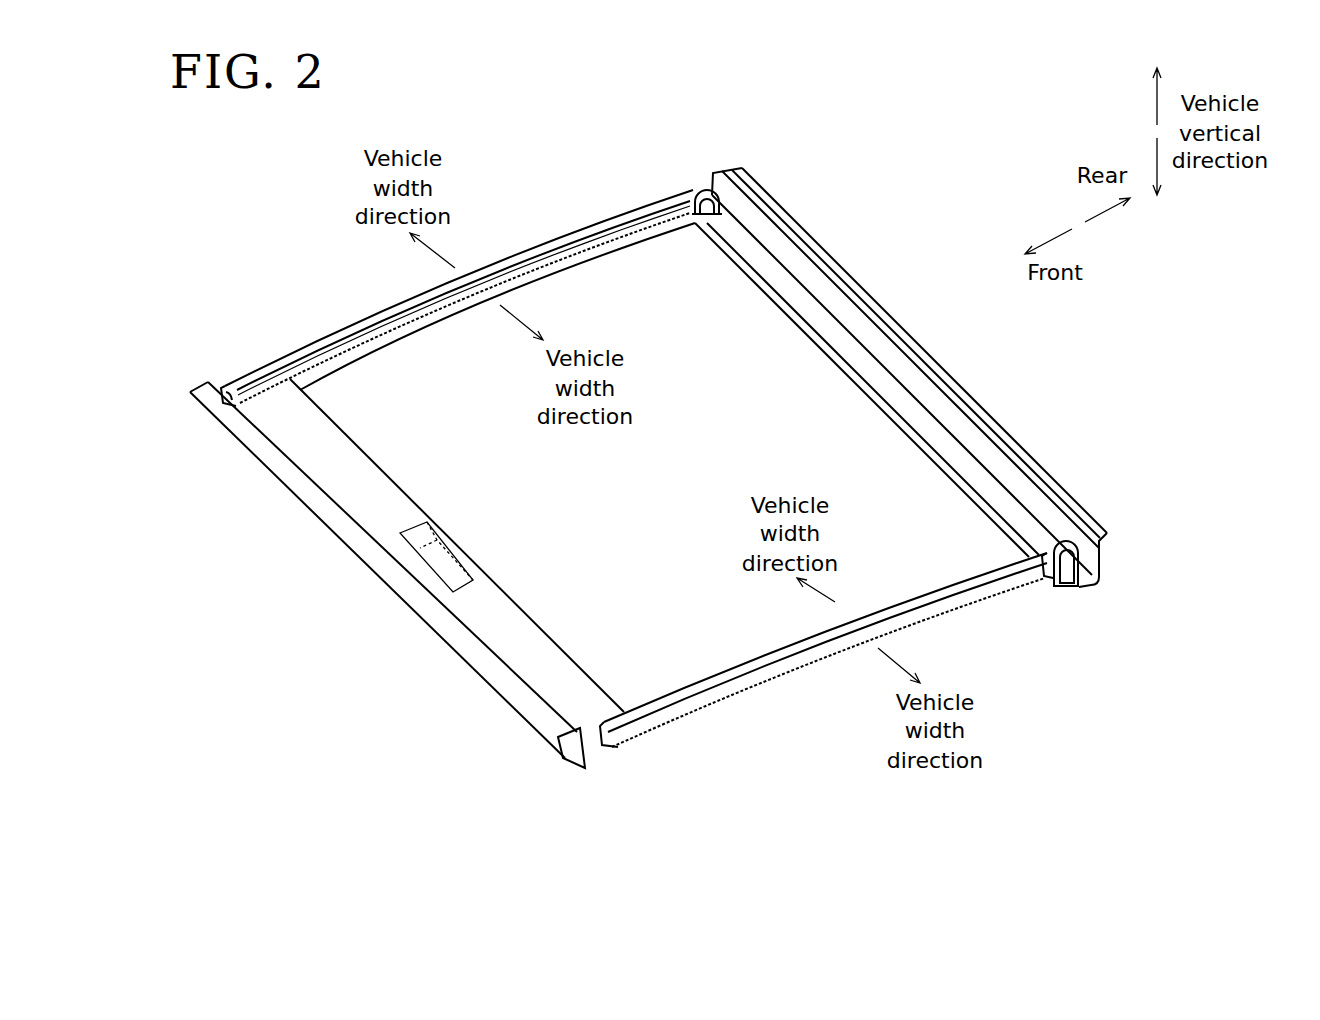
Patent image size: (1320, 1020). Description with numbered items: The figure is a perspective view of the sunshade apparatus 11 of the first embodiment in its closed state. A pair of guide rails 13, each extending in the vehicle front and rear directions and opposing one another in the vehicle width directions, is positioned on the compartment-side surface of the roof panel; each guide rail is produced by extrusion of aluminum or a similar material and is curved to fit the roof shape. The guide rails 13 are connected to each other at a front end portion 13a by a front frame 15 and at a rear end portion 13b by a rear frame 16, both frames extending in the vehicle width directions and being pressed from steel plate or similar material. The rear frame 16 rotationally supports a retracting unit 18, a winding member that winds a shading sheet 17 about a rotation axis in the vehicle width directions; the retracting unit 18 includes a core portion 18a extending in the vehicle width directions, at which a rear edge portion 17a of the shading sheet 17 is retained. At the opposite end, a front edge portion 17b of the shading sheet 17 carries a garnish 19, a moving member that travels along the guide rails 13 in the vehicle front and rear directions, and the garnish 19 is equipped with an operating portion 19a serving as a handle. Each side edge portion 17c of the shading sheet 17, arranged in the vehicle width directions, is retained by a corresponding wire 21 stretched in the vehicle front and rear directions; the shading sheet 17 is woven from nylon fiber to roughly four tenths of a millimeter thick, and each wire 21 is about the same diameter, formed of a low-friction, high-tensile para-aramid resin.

The sunshade apparatus 11 is at (521, 189).
The guide rail 13 is at (350, 322).
The front end portion 13a is at (236, 356).
The rear end portion 13b is at (671, 175).
The front frame 15 is at (453, 650).
The rear frame 16 is at (942, 358).
The shading sheet 17 is at (490, 415).
The rear edge portion 17a is at (977, 493).
The front edge portion 17b is at (508, 593).
The side edge portion 17c is at (552, 272).
The retracting unit 18 is at (958, 411).
The core portion 18a is at (847, 347).
The garnish 19 is at (353, 498).
The operating portion 19a is at (440, 548).
The wire 21 is at (327, 337).